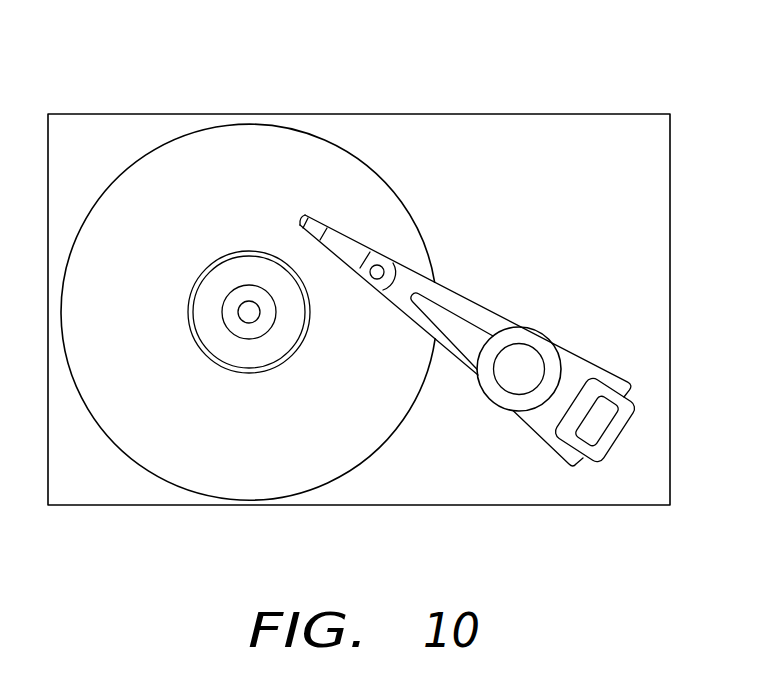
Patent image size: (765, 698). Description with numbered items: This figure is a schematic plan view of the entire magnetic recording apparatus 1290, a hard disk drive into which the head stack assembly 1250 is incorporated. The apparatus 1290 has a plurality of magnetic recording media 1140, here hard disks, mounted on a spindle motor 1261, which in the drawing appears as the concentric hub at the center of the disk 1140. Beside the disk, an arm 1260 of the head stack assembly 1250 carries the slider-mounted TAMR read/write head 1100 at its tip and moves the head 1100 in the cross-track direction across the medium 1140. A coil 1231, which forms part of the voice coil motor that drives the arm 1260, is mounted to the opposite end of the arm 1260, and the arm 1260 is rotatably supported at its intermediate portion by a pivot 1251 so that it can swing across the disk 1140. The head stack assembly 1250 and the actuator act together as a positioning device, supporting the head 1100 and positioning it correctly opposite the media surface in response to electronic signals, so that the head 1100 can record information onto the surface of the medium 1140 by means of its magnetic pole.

The magnetic recording apparatus 1290 is at (397, 95).
The read/write head 1100 is at (317, 214).
The actuator pivot bearing 1251 is at (533, 328).
The magnetic recording medium 1140 is at (182, 488).
The spindle motor 1261 is at (251, 323).
The arm 1260 is at (463, 363).
The head stack assembly 1250 is at (529, 411).
The coil 1231 is at (617, 440).